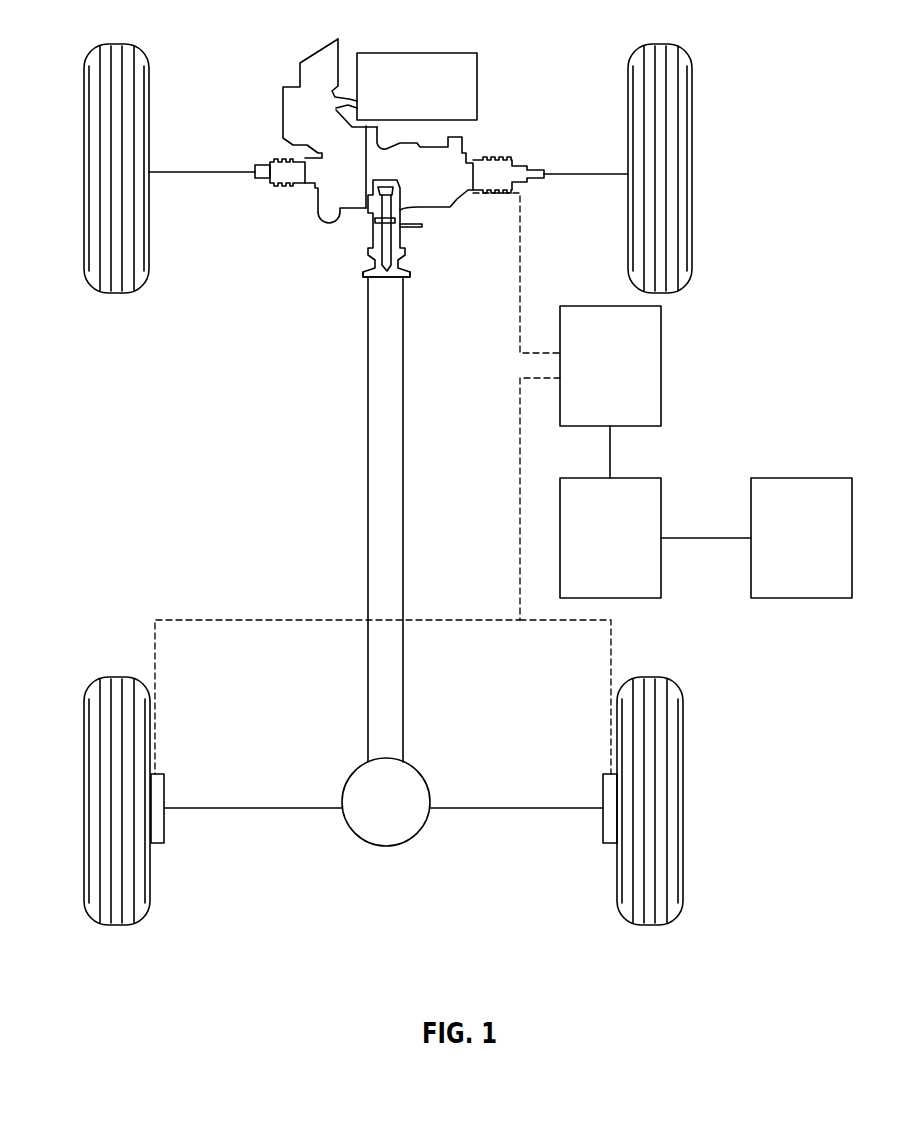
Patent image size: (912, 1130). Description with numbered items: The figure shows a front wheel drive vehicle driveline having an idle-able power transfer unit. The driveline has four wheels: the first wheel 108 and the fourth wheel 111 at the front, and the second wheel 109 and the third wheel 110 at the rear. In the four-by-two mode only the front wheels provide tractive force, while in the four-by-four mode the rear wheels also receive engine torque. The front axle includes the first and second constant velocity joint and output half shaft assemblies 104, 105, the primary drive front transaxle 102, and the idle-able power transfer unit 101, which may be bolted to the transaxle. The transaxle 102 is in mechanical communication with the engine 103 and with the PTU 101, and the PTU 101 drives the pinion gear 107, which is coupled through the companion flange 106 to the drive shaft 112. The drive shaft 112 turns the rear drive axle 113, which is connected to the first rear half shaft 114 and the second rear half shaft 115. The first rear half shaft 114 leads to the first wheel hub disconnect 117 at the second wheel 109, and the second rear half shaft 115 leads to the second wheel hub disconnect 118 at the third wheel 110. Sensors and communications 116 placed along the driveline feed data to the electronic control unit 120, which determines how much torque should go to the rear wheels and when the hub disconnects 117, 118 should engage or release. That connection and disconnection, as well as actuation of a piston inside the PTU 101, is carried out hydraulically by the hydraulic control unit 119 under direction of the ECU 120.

The idle-able power transfer unit 101 is at (450, 147).
The primary drive front transaxle 102 is at (312, 53).
The engine 103 is at (417, 53).
The first constant velocity joint and output half shaft assembly 104 is at (512, 160).
The second constant velocity joint and output half shaft assembly 105 is at (283, 187).
The companion flange 106 is at (363, 275).
The pinion gear 107 is at (370, 225).
The first wheel 108 is at (673, 45).
The second wheel 109 is at (648, 925).
The third wheel 110 is at (107, 925).
The fourth wheel 111 is at (95, 52).
The drive shaft 112 is at (368, 467).
The rear drive axle 113 is at (385, 847).
The first rear half shaft 114 is at (478, 808).
The second rear half shaft 115 is at (253, 808).
The sensors and communications 116 is at (800, 598).
The first wheel hub disconnect 117 is at (612, 843).
The second wheel hub disconnect 118 is at (157, 843).
The hydraulic control unit 119 is at (661, 366).
The electronic control unit 120 is at (648, 598).